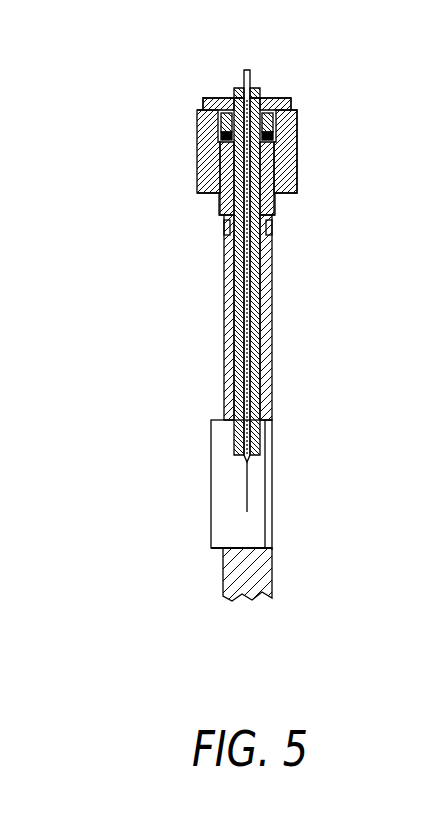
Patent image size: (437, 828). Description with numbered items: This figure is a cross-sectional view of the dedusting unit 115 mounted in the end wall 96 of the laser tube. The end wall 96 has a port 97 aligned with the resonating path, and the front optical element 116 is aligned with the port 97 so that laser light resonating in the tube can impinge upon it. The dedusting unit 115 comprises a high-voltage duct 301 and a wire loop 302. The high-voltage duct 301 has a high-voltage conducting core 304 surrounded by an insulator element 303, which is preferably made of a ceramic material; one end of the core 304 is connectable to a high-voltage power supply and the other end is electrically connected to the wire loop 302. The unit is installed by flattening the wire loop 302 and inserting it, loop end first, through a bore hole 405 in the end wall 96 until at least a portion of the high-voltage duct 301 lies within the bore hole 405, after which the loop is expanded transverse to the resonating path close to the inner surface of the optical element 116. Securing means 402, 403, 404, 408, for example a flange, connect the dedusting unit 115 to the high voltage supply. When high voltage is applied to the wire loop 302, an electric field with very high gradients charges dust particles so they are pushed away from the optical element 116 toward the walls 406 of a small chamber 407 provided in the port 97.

The high-voltage conducting core 304 is at (245, 68).
The securing means 404 is at (270, 98).
The securing means 403 is at (297, 125).
The securing means 402 is at (297, 160).
The dedusting unit 115 is at (200, 205).
The securing means 408 is at (273, 210).
The high-voltage duct 301 is at (227, 313).
The bore hole 405 is at (273, 332).
The insulator element 303 is at (261, 377).
The port 97 is at (200, 446).
The front optical element 116 is at (272, 442).
The small chamber 407 is at (226, 508).
The wire loop 302 is at (248, 492).
The walls 406 is at (213, 548).
The end wall 96 is at (250, 577).